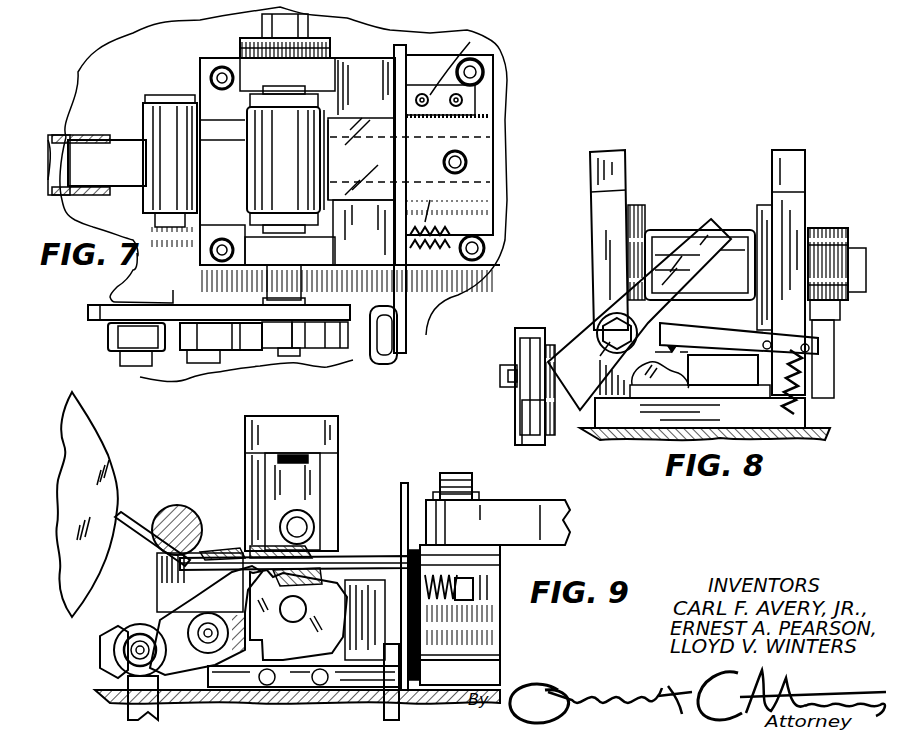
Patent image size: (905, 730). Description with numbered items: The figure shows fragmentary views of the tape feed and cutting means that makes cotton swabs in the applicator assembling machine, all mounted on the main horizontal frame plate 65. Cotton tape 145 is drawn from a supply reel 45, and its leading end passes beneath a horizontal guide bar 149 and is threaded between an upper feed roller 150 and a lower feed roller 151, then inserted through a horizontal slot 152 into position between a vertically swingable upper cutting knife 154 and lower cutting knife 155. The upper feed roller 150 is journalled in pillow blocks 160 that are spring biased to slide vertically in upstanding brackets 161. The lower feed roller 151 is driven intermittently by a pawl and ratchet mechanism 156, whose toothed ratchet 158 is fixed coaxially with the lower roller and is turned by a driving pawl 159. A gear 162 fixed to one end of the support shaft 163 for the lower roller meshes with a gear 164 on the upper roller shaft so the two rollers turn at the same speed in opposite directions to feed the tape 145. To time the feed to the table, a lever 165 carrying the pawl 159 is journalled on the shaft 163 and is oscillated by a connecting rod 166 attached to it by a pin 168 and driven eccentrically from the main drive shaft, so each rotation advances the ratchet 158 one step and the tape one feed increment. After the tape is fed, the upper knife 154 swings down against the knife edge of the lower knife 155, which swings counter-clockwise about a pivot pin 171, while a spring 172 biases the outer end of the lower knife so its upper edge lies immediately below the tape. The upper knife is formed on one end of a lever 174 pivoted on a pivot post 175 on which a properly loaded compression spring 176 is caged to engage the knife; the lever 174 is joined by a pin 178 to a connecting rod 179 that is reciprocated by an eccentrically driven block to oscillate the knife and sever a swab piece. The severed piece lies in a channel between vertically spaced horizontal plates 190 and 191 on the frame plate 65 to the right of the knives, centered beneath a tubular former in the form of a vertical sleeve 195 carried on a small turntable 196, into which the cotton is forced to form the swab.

In FIG. 7, the supply reel 45 is at (60, 135).
In FIG. 9, the supply reel 45 is at (90, 435).
In FIG. 7, the main horizontal frame plate 65 is at (440, 300).
In FIG. 8, the main horizontal frame plate 65 is at (655, 428).
In FIG. 9, the main horizontal frame plate 65 is at (105, 695).
In FIG. 7, the cotton tape 145 is at (97, 165).
In FIG. 8, the cotton tape 145 is at (748, 278).
In FIG. 9, the cotton tape 145 is at (135, 535).
In FIG. 7, the horizontal guide bar 149 is at (178, 166).
In FIG. 9, the horizontal guide bar 149 is at (185, 515).
In FIG. 7, the upper feed roller 150 is at (283, 159).
In FIG. 8, the upper feed roller 150 is at (740, 232).
In FIG. 9, the upper feed roller 150 is at (258, 548).
In FIG. 8, the lower feed roller 151 is at (700, 398).
In FIG. 9, the lower feed roller 151 is at (298, 588).
In FIG. 9, the horizontal slot 152 is at (382, 555).
In FIG. 7, the upper cutting knife 154 is at (393, 160).
In FIG. 8, the upper cutting knife 154 is at (735, 268).
In FIG. 9, the upper cutting knife 154 is at (400, 491).
In FIG. 7, the lower cutting knife 155 is at (399, 116).
In FIG. 8, the lower cutting knife 155 is at (739, 336).
In FIG. 7, the pawl and ratchet mechanism 156 is at (347, 355).
In FIG. 8, the pawl and ratchet mechanism 156 is at (550, 347).
In FIG. 9, the pawl and ratchet mechanism 156 is at (265, 645).
In FIG. 7, the toothed ratchet 158 is at (324, 350).
In FIG. 8, the toothed ratchet 158 is at (525, 412).
In FIG. 9, the toothed ratchet 158 is at (298, 615).
In FIG. 7, the driving pawl 159 is at (225, 340).
In FIG. 9, the driving pawl 159 is at (212, 608).
In FIG. 9, the pillow blocks 160 is at (310, 485).
In FIG. 8, the upstanding brackets 161 is at (620, 162).
In FIG. 9, the upstanding brackets 161 is at (335, 432).
In FIG. 8, the gear 162 is at (840, 375).
In FIG. 7, the support shaft 163 is at (287, 356).
In FIG. 8, the support shaft 163 is at (508, 375).
In FIG. 9, the support shaft 163 is at (306, 609).
In FIG. 7, the gear 164 is at (310, 50).
In FIG. 8, the gear 164 is at (832, 250).
In FIG. 7, the lever 165 is at (110, 313).
In FIG. 9, the lever 165 is at (103, 650).
In FIG. 7, the connecting rod 166 is at (125, 340).
In FIG. 9, the connecting rod 166 is at (132, 636).
In FIG. 7, the pin 168 is at (122, 365).
In FIG. 9, the pin 168 is at (125, 660).
In FIG. 8, the pivot pin 171 is at (706, 365).
In FIG. 8, the spring 172 is at (800, 415).
In FIG. 8, the lever 174 is at (582, 345).
In FIG. 9, the lever 174 is at (410, 550).
In FIG. 8, the pivot post 175 is at (615, 340).
In FIG. 9, the pivot post 175 is at (475, 585).
In FIG. 9, the compression spring 176 is at (452, 610).
In FIG. 9, the pin 178 is at (420, 660).
In FIG. 9, the connecting rod 179 is at (392, 650).
In FIG. 7, the upper horizontal plate 190 is at (485, 148).
In FIG. 9, the upper horizontal plate 190 is at (472, 545).
In FIG. 9, the lower horizontal plate 191 is at (498, 612).
In FIG. 7, the vertical sleeve 195 is at (467, 163).
In FIG. 7, the small turntable 196 is at (515, 16).
In FIG. 9, the small turntable 196 is at (490, 508).